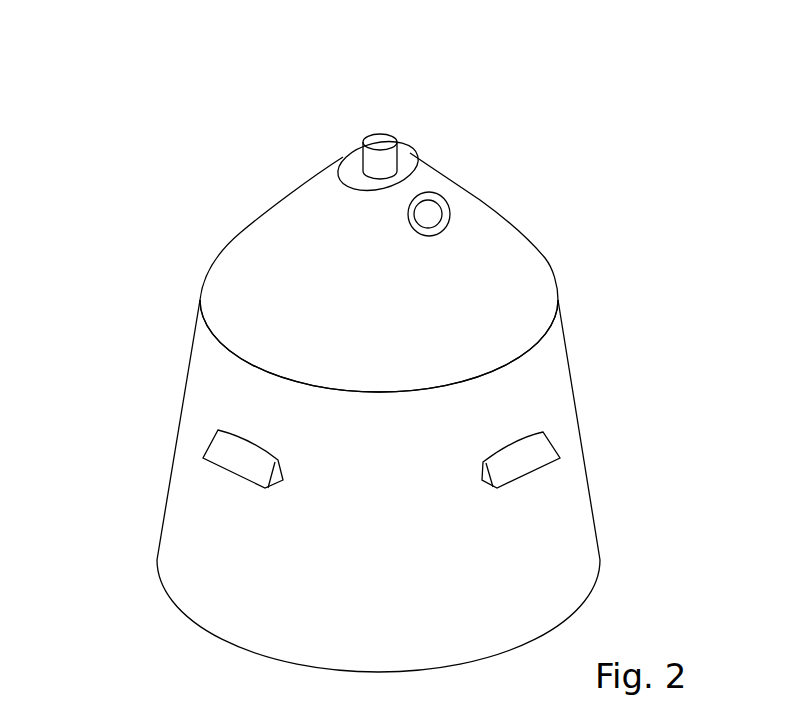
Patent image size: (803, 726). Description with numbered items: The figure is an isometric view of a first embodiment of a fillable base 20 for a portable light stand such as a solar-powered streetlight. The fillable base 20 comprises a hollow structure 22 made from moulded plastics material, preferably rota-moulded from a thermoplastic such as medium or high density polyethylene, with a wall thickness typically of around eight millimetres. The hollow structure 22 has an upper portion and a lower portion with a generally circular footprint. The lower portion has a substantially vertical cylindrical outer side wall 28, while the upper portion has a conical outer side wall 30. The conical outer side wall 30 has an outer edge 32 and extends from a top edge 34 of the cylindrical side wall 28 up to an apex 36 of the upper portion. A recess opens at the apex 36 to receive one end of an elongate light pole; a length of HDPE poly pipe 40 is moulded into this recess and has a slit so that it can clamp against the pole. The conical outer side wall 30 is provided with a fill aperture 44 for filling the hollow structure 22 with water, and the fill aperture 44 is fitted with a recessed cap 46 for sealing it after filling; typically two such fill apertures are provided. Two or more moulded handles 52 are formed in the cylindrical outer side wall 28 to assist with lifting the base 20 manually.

The fillable base 20 is at (396, 346).
The hollow structure 22 is at (356, 486).
The cylindrical outer side wall 28 is at (190, 538).
The conical outer side wall 30 is at (297, 212).
The outer edge 32 is at (232, 342).
The top edge 34 is at (230, 362).
The apex 36 is at (441, 109).
The poly pipe 40 is at (380, 135).
The fill aperture 44 is at (508, 182).
The recessed cap 46 is at (446, 231).
The moulded handles 52 is at (527, 463).